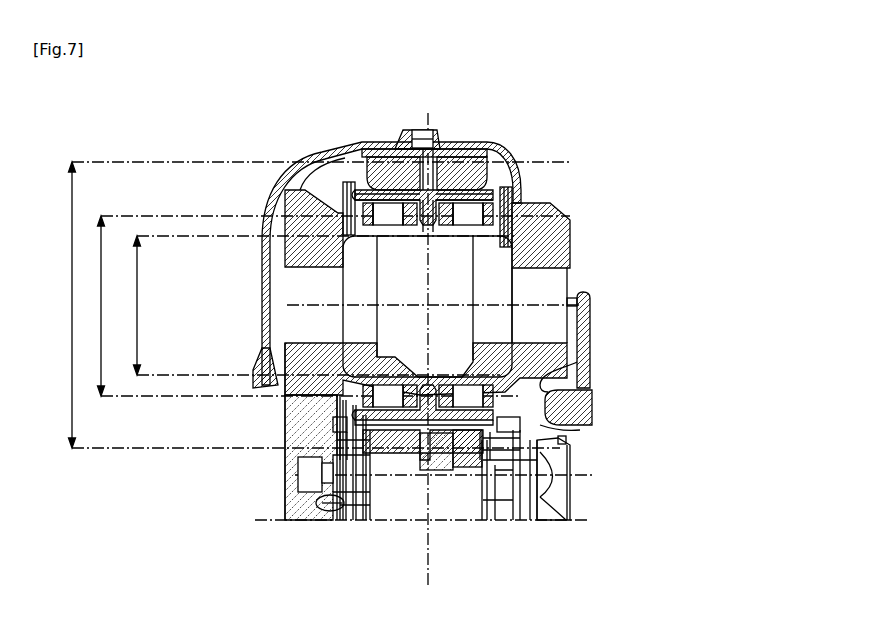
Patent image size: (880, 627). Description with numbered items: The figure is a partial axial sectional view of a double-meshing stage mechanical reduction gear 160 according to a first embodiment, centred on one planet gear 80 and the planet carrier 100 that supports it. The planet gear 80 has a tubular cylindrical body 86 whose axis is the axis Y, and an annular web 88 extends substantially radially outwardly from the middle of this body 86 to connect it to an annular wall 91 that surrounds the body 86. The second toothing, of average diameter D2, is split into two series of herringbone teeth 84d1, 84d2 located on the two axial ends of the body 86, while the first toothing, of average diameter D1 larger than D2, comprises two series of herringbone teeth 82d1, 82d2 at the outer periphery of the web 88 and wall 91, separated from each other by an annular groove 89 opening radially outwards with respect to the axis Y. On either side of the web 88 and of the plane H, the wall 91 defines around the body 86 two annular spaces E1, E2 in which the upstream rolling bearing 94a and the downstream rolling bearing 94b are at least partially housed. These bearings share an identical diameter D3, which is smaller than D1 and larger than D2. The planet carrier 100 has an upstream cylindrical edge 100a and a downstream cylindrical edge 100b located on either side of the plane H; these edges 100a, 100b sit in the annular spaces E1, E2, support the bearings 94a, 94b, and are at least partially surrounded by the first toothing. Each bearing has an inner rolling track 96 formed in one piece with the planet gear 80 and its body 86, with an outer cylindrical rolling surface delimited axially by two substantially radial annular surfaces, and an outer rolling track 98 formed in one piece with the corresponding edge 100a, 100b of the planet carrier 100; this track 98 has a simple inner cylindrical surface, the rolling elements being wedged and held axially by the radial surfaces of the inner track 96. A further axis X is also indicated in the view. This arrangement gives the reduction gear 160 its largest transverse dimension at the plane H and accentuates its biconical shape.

The reduction gear 160 is at (660, 262).
The planet gear 80 is at (272, 367).
The herringbone teeth of the first toothing 82d1 is at (358, 518).
The herringbone teeth of the first toothing 82d2 is at (455, 468).
The herringbone teeth of the second toothing 84d1 is at (285, 397).
The herringbone teeth of the second toothing 84d2 is at (592, 407).
The cylindrical body 86 is at (505, 273).
The annular web 88 is at (432, 176).
The annular groove 89 is at (540, 368).
The annular wall 91 is at (392, 145).
The upstream rolling bearing 94a is at (363, 217).
The downstream rolling bearing 94b is at (492, 208).
The inner rolling track 96 is at (398, 372).
The outer rolling track 98 is at (340, 188).
The planet carrier 100 is at (578, 336).
The upstream cylindrical edge 100a is at (322, 506).
The downstream cylindrical edge 100b is at (553, 428).
The plane H is at (502, 228).
The axis of the planet gear Y is at (318, 304).
The base axis X is at (257, 519).
The annular space E1 is at (380, 183).
The annular space E2 is at (463, 182).
The average diameter of the first toothing D1 is at (71, 280).
The average diameter of the second toothing D2 is at (136, 284).
The diameter of the rolling bearings D3 is at (100, 284).